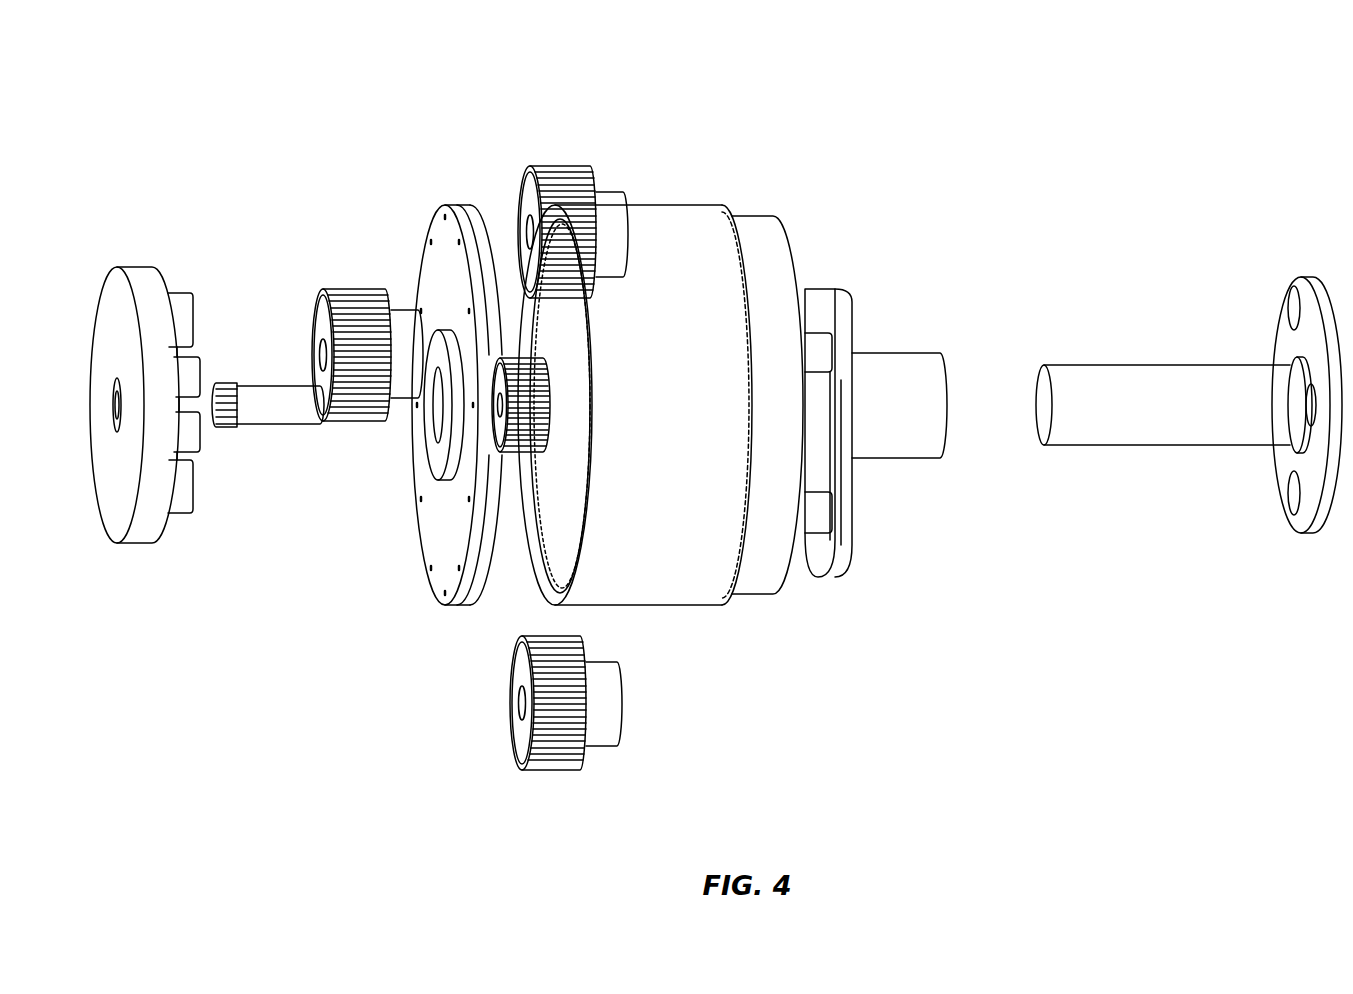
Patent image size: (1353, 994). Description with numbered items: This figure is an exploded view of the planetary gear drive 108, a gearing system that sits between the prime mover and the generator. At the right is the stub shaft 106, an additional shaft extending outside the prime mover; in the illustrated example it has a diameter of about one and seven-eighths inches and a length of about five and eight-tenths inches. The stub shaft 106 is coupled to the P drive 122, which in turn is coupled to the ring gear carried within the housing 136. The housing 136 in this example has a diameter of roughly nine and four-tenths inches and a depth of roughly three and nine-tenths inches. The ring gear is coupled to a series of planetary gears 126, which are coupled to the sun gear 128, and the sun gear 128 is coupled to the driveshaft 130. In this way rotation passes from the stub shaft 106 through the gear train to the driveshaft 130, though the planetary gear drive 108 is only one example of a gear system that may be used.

The planetary gear drive 108 is at (152, 108).
The driveshaft 130 is at (255, 382).
The planetary gears 126 is at (346, 288).
The sun gear 128 is at (490, 237).
The housing 136 is at (690, 206).
The P drive 122 is at (896, 353).
The stub shaft 106 is at (1193, 366).